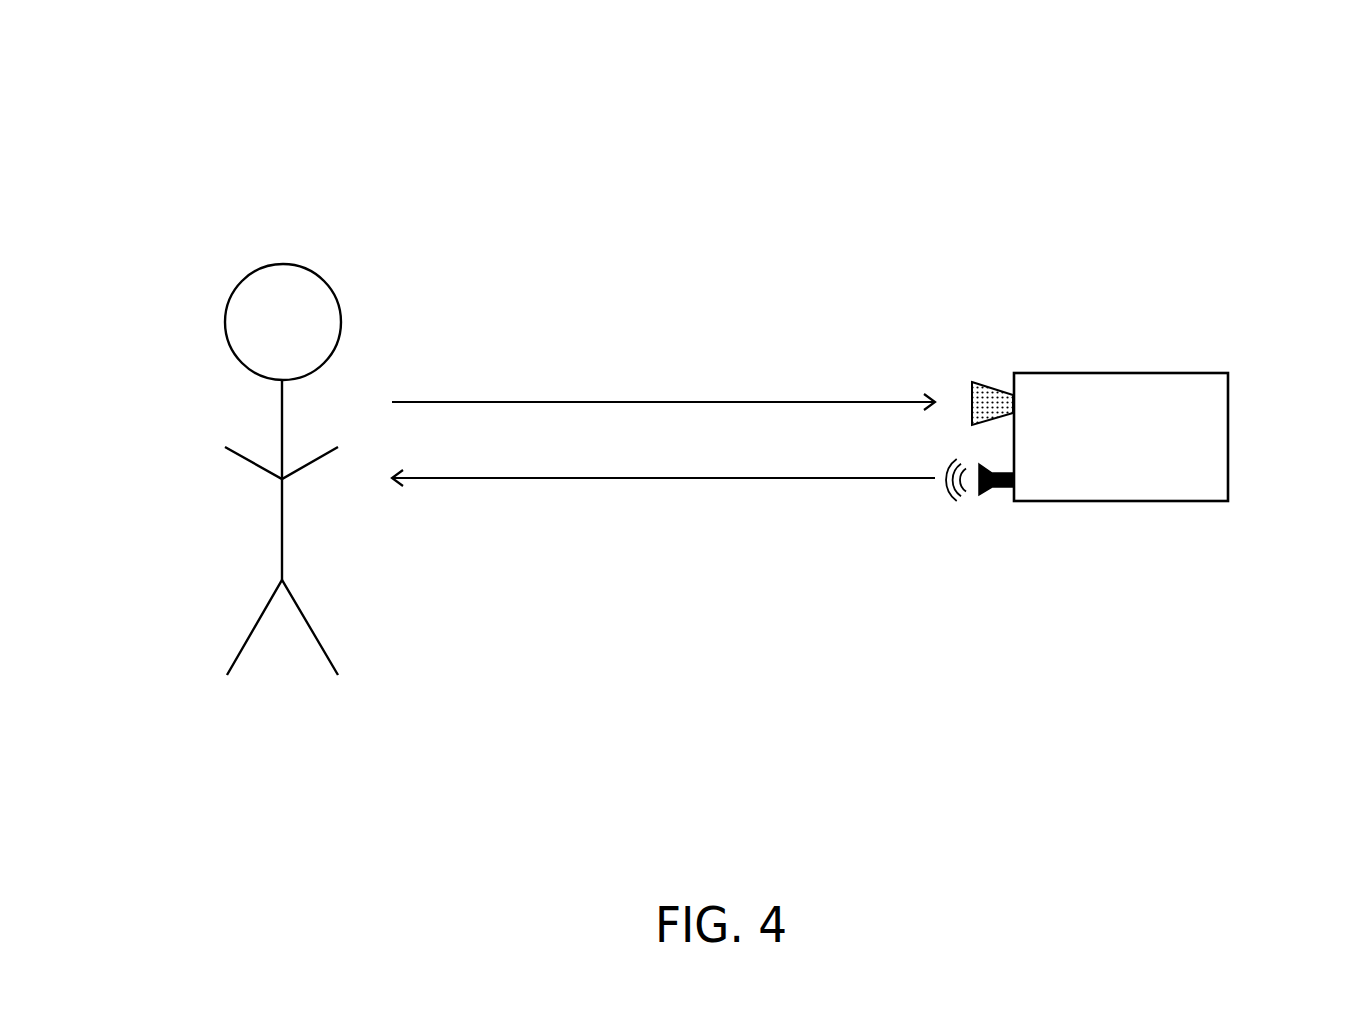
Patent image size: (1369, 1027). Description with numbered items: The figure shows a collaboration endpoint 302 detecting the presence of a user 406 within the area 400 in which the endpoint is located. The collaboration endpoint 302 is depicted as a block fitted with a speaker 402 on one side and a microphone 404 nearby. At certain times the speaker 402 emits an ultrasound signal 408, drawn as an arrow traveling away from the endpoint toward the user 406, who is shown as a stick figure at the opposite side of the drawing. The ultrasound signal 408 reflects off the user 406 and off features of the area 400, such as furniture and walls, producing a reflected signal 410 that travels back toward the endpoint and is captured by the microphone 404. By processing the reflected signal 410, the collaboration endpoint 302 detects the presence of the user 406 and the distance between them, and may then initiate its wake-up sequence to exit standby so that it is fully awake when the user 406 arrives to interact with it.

The area 400 is at (1283, 72).
The speaker 402 is at (980, 497).
The microphone 404 is at (972, 380).
The user 406 is at (230, 297).
The ultrasound signal 408 is at (663, 497).
The reflected signal 410 is at (663, 383).
The collaboration endpoint 302 is at (1137, 468).